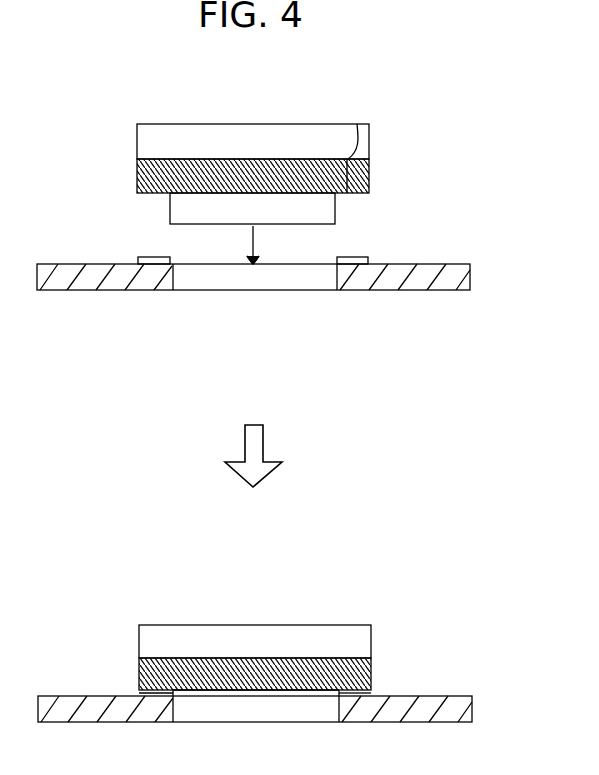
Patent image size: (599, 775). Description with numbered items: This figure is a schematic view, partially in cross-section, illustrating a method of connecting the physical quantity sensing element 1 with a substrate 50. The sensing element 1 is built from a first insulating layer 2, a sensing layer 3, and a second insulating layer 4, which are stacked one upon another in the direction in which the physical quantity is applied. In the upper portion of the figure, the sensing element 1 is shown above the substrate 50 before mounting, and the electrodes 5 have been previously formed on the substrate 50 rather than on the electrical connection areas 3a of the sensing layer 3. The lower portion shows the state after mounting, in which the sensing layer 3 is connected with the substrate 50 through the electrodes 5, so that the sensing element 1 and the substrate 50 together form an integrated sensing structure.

The physical quantity sensing element 1 is at (427, 123).
The first insulating layer 2 is at (370, 143).
The sensing layer 3 is at (370, 177).
The electrical connection area 3a is at (357, 124).
The second insulating layer 4 is at (336, 213).
The electrode 5 is at (366, 257).
The substrate 50 is at (471, 273).